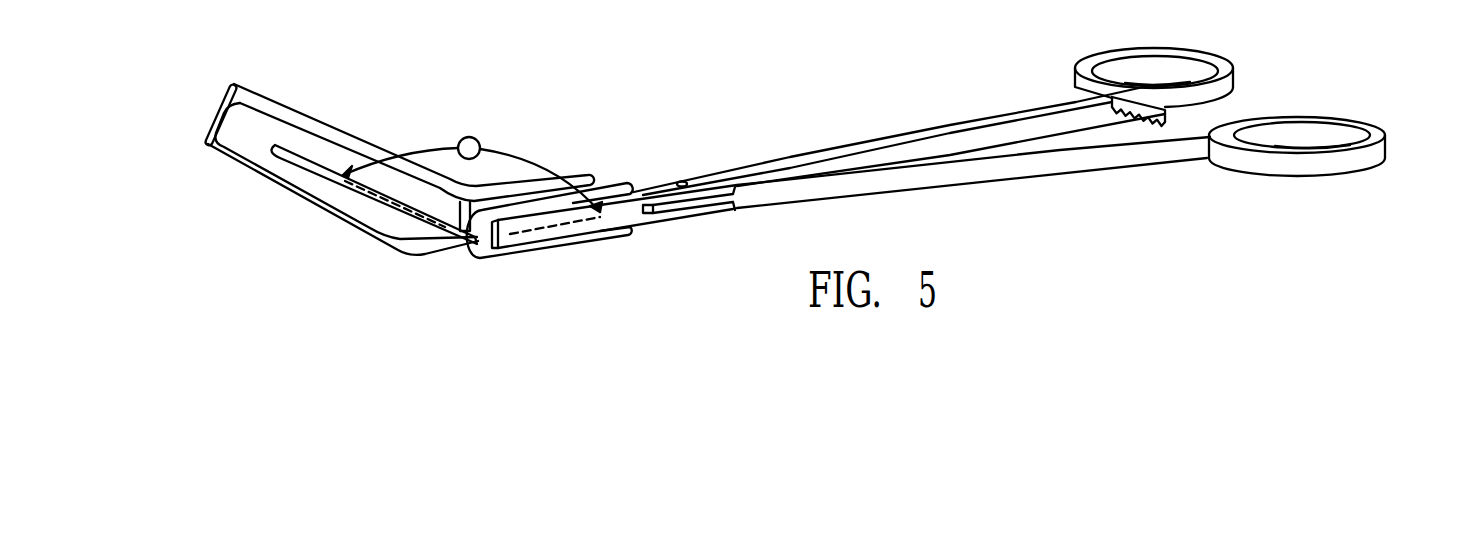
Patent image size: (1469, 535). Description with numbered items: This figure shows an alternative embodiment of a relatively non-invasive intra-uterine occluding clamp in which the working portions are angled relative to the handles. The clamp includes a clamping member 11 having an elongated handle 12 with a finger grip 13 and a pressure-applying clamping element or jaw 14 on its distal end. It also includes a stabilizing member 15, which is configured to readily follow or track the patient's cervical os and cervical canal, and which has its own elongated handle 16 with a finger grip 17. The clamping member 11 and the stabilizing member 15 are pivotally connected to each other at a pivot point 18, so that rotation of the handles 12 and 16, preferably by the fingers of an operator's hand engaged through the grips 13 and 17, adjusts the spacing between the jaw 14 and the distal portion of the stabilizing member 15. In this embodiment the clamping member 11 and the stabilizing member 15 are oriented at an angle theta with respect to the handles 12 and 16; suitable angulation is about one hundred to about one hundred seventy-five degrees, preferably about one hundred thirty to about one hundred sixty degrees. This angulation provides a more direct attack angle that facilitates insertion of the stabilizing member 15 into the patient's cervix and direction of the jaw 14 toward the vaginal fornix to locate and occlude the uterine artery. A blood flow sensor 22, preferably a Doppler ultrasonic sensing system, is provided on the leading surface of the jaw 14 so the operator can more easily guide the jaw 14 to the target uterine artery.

The clamping member 11 is at (321, 122).
The elongated handle 12 is at (1074, 172).
The finger grip 13 is at (1362, 121).
The jaw 14 is at (232, 160).
The stabilizing member 15 is at (302, 167).
The elongated handle 16 is at (1010, 112).
The finger grip 17 is at (1233, 66).
The pivot point 18 is at (685, 180).
The blood flow sensor 22 is at (209, 128).